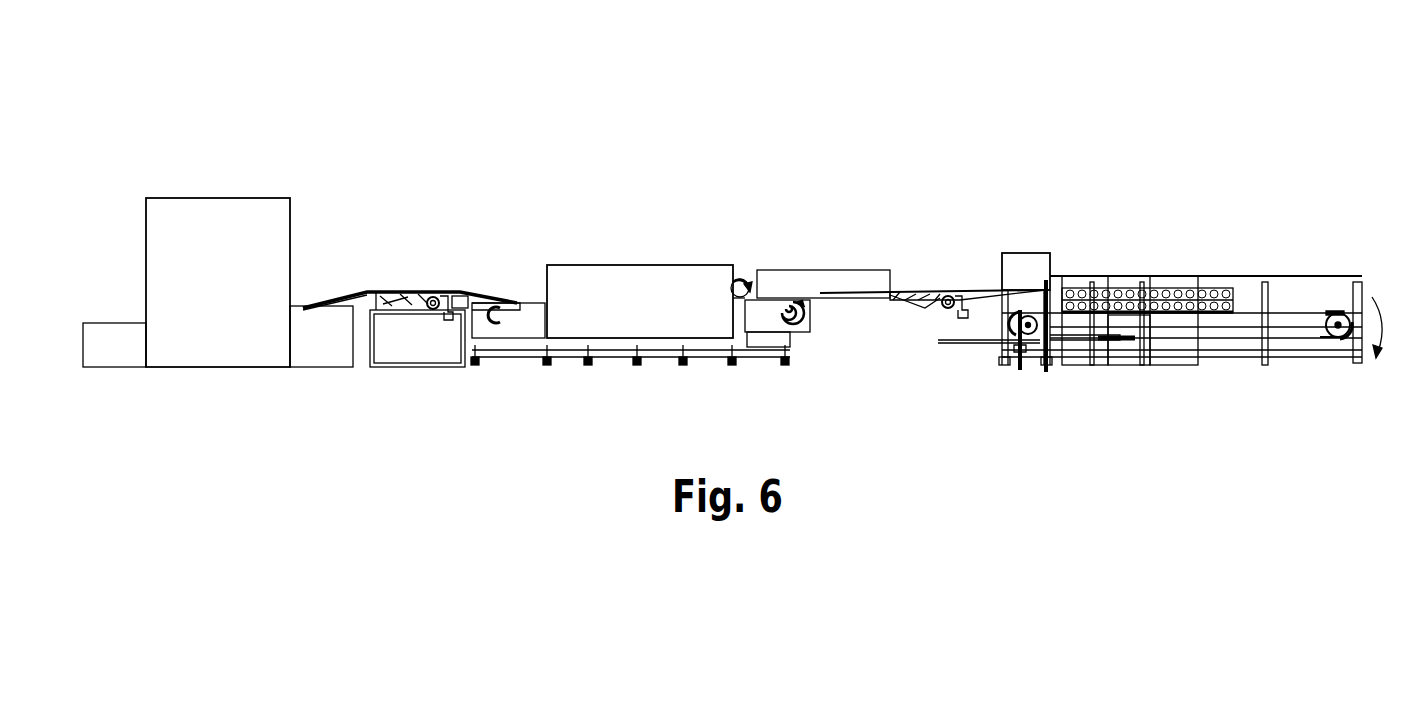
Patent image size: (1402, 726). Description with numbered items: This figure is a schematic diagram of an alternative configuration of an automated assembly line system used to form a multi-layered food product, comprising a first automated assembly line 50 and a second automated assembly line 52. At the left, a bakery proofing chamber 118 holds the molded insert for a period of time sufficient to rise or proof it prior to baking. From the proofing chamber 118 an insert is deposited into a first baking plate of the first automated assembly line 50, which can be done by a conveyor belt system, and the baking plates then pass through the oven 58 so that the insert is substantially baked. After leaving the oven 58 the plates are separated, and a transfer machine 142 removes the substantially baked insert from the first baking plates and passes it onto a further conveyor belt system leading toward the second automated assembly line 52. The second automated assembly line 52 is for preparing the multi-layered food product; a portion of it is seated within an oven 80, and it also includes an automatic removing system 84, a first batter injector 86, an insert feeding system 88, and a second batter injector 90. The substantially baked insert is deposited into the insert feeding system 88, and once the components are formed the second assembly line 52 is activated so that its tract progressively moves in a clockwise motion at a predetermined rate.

The bakery proofing chamber 118 is at (184, 150).
The first automated assembly line 50 is at (417, 105).
The oven 58 is at (629, 245).
The transfer machine 142 is at (812, 248).
The second automated assembly line 52 is at (1077, 198).
The oven 80 is at (1186, 242).
The automatic removing system 84 is at (1019, 366).
The first batter injector 86 is at (1080, 378).
The insert feeding system 88 is at (1130, 378).
The second batter injector 90 is at (1183, 378).